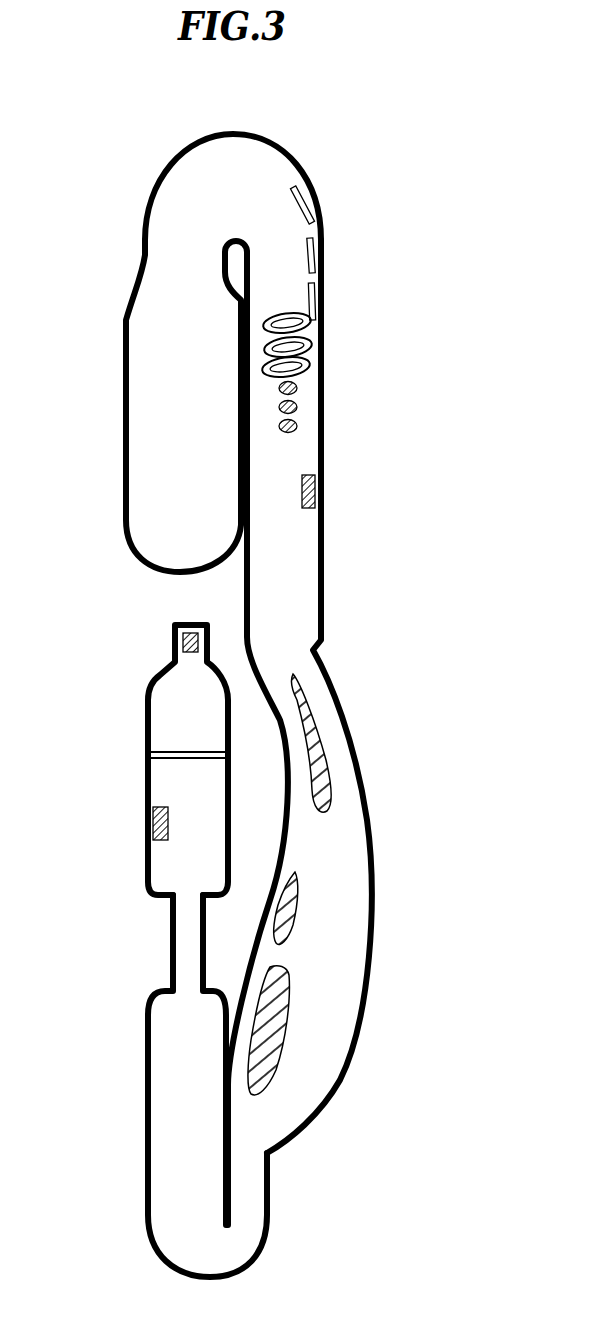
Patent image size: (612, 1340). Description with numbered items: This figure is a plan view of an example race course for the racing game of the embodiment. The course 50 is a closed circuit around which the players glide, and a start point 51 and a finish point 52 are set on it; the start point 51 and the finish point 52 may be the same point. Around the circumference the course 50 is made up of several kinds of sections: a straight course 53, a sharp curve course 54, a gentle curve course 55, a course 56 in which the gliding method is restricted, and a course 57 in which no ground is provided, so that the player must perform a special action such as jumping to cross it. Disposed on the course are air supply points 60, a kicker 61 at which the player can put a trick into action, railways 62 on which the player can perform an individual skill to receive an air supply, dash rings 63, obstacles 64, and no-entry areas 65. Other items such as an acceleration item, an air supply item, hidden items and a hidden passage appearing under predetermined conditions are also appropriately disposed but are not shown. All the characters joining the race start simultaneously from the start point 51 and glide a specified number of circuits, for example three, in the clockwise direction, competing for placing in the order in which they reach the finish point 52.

The course 50 is at (400, 164).
The start point 51 is at (158, 752).
The finish point 52 is at (158, 759).
The straight course 53 is at (125, 385).
The sharp curve course 54 is at (278, 148).
The gentle curve course 55 is at (340, 692).
The course in which the gliding method is restricted 56 is at (173, 935).
The course in which no ground is provided 57 is at (183, 595).
The air supply point 60 is at (323, 487).
The kicker 61 is at (177, 641).
The railway 62 is at (312, 210).
The dash ring 63 is at (308, 365).
The obstacle 64 is at (298, 427).
The no-entry area 65 is at (334, 762).